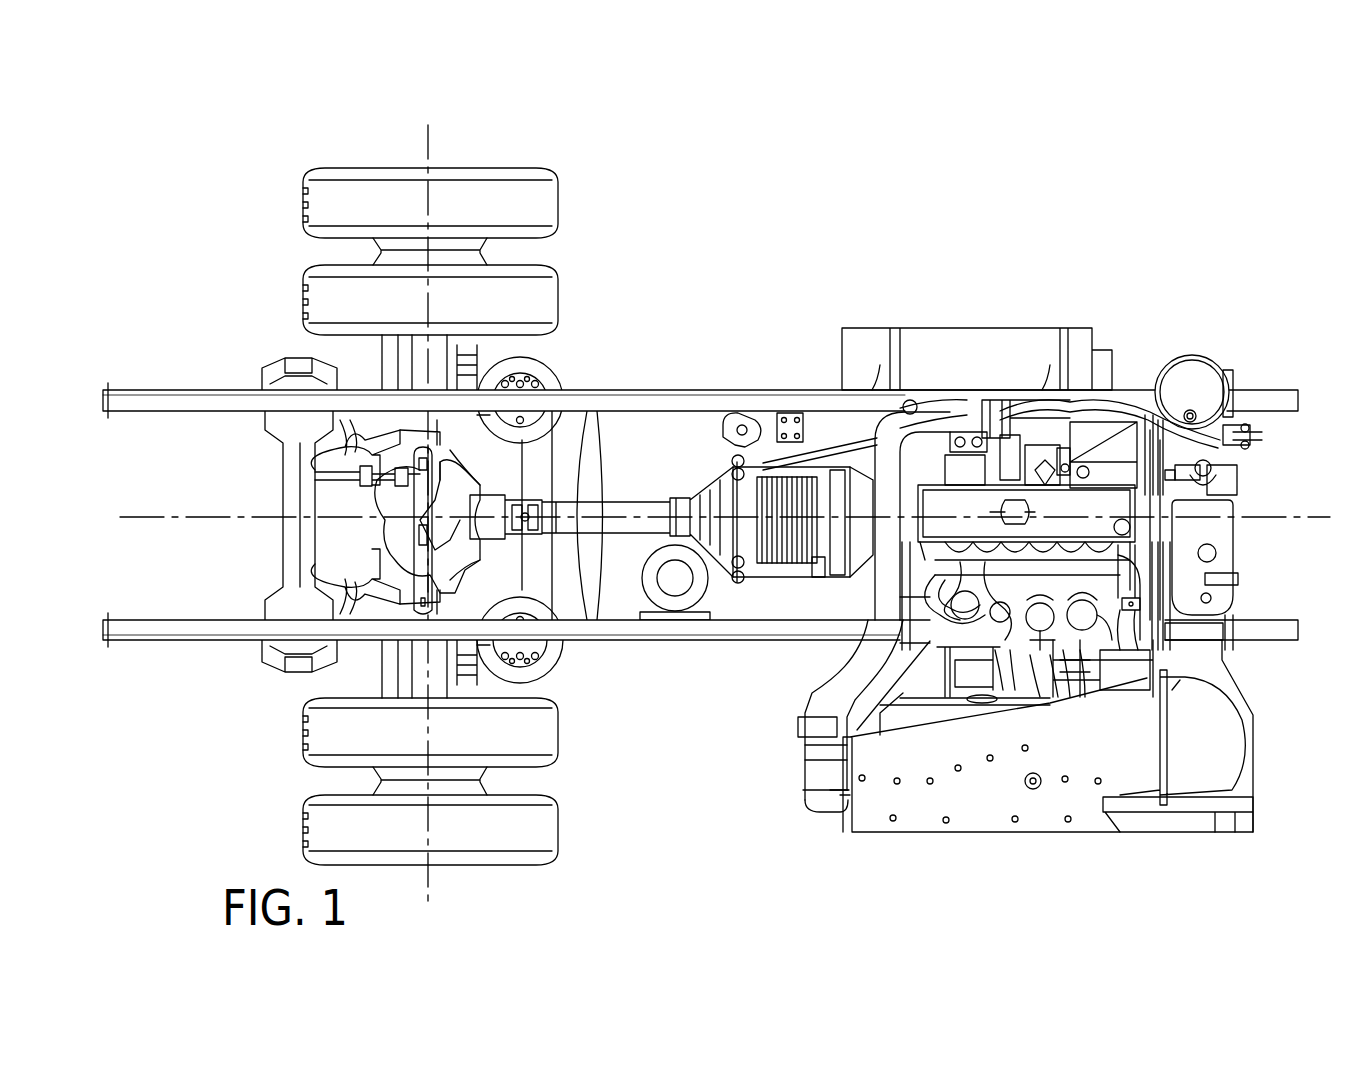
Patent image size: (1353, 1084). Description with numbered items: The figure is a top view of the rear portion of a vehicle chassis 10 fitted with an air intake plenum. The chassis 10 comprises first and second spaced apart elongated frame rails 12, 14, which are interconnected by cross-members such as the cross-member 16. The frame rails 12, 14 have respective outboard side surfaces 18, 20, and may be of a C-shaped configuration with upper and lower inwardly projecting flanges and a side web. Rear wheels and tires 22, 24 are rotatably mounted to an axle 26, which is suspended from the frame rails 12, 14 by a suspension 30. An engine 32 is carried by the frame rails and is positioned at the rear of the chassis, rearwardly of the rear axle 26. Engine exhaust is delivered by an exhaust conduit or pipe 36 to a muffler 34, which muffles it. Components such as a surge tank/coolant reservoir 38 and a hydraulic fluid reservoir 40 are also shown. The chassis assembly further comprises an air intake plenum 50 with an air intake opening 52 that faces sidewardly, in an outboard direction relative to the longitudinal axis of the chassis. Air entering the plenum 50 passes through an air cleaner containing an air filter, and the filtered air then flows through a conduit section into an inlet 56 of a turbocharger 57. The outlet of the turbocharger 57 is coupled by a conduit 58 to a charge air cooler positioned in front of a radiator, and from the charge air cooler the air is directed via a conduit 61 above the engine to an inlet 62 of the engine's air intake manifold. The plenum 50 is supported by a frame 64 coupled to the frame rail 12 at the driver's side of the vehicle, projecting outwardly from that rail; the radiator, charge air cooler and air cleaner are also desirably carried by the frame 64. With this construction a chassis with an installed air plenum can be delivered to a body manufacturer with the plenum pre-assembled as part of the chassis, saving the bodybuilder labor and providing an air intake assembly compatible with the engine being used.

The chassis 10 is at (716, 519).
The frame rail 12 is at (700, 536).
The frame rail 14 is at (674, 393).
The cross-member 16 is at (610, 460).
The outboard side surface 18 is at (698, 642).
The outboard side surface 20 is at (754, 392).
The rear wheel and tire 22 is at (488, 880).
The rear wheel and tire 24 is at (521, 152).
The axle 26 is at (428, 672).
The suspension 30 is at (250, 350).
The engine 32 is at (1133, 377).
The muffler 34 is at (985, 348).
The exhaust conduit 36 is at (845, 432).
The surge tank/coolant reservoir 38 is at (1225, 548).
The hydraulic fluid reservoir 40 is at (1212, 360).
The air intake plenum 50 is at (1033, 812).
The air intake opening 52 is at (927, 832).
The inlet 56 is at (1040, 699).
The turbocharger 57 is at (1003, 692).
The conduit 58 is at (1065, 699).
The conduit 61 is at (823, 683).
The inlet 62 is at (1040, 455).
The frame 64 is at (838, 798).